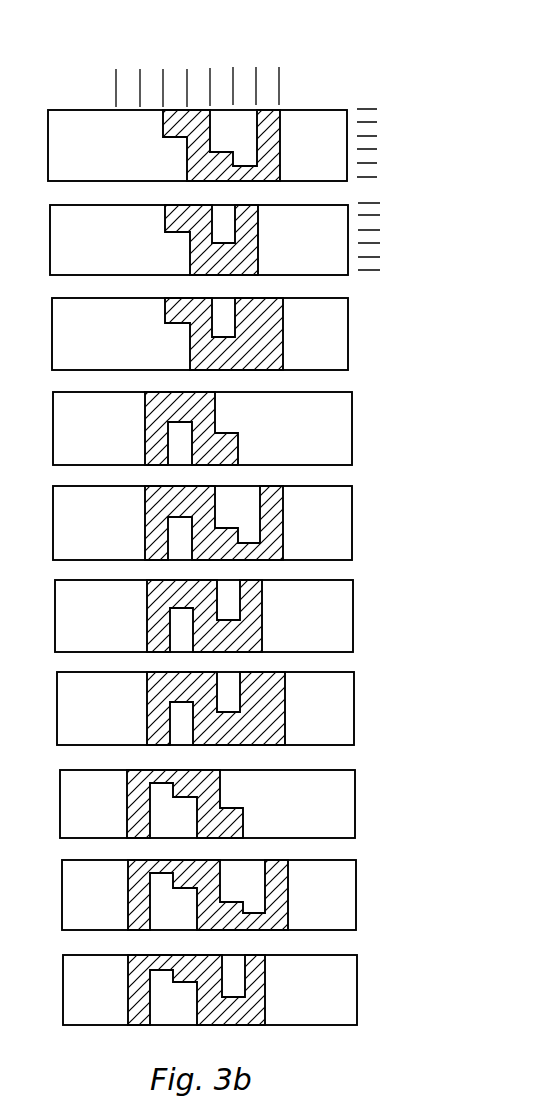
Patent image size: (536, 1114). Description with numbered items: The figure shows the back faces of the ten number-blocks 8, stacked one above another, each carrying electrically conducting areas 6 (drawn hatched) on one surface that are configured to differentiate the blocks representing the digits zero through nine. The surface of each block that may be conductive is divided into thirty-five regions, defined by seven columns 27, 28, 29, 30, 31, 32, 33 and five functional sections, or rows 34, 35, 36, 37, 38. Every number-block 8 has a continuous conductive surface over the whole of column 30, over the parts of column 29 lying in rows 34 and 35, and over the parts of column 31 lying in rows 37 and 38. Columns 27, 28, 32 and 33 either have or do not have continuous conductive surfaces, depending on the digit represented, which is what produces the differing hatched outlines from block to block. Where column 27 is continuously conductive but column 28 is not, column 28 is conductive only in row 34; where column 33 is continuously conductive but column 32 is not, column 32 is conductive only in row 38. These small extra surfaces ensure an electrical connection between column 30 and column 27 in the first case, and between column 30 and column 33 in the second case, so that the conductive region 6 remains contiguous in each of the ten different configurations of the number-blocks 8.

The electrically conducting areas 6 is at (310, 283).
The number-blocks 8 is at (56, 159).
The column 27 is at (130, 77).
The column 28 is at (152, 73).
The column 29 is at (178, 71).
The column 30 is at (197, 71).
The column 31 is at (222, 71).
The column 32 is at (245, 71).
The column 33 is at (268, 71).
The row 34 is at (376, 117).
The row 35 is at (376, 128).
The row 36 is at (378, 142).
The row 37 is at (380, 156).
The row 38 is at (378, 171).